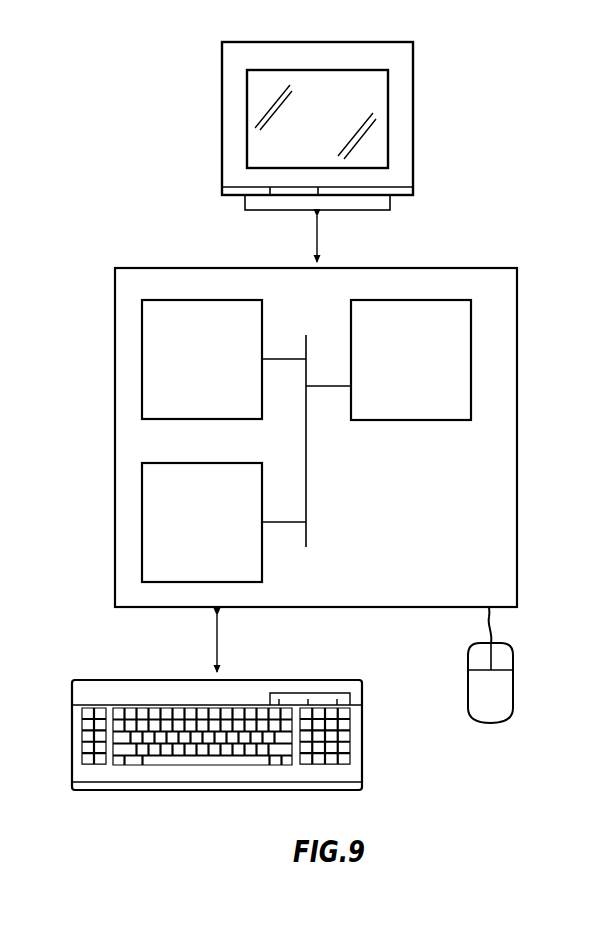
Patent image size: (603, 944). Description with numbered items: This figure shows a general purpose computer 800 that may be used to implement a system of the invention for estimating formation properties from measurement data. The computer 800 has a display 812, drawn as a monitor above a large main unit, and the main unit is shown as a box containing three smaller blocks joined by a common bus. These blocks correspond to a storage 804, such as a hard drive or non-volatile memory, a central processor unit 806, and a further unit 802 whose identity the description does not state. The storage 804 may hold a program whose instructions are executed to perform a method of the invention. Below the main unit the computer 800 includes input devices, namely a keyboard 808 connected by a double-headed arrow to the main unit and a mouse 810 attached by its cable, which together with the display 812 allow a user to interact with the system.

The general purpose computer 800 is at (523, 159).
The processor 802 is at (439, 369).
The storage 804 is at (229, 369).
The central processor unit 806 is at (229, 532).
The keyboard 808 is at (137, 793).
The mouse 810 is at (508, 705).
The display 812 is at (344, 133).